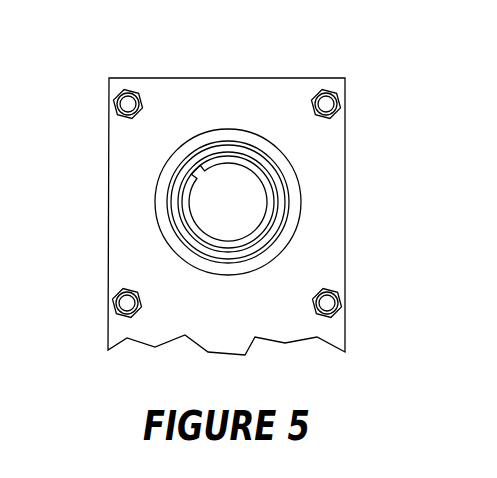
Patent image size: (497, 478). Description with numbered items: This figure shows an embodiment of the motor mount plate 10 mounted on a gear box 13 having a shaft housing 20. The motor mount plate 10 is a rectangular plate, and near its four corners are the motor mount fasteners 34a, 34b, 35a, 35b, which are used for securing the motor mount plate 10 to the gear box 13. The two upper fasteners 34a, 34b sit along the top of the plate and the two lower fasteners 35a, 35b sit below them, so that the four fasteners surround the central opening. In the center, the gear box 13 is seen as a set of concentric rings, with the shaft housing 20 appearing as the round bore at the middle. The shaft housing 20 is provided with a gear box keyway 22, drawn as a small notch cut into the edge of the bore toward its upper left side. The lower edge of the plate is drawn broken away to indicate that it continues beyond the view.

The motor mount plate 10 is at (197, 92).
The gear box 13 is at (165, 237).
The shaft housing 20 is at (260, 178).
The gear box keyway 22 is at (192, 181).
The motor mount fastener 34a is at (118, 89).
The motor mount fastener 34b is at (333, 91).
The motor mount fastener 35a is at (122, 289).
The motor mount fastener 35b is at (332, 289).